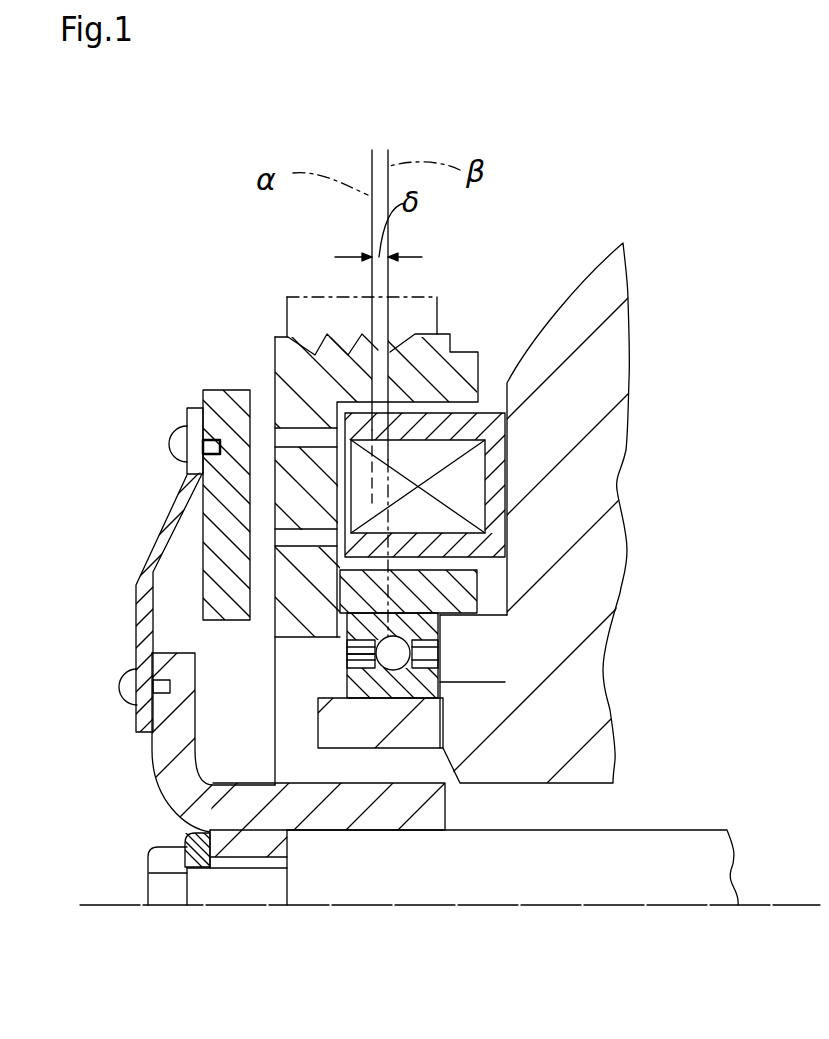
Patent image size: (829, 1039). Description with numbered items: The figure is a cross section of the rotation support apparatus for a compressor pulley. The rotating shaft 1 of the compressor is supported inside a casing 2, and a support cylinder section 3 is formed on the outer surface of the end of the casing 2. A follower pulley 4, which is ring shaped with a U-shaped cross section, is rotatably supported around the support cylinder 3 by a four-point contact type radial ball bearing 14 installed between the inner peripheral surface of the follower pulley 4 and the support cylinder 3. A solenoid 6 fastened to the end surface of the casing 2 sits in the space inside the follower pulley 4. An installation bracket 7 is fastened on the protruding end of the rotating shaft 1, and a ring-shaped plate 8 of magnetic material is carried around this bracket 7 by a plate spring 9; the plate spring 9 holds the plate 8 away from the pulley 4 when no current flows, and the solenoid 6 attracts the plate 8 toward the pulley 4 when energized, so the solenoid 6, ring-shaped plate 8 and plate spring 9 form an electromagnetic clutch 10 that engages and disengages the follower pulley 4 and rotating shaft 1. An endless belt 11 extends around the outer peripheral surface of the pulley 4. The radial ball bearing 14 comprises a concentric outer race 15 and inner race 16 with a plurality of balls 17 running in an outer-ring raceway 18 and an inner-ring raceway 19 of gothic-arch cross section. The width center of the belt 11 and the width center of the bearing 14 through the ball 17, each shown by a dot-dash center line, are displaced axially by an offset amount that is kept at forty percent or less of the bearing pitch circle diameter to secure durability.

The rotating shaft 1 is at (497, 885).
The casing 2 is at (602, 355).
The support cylinder section 3 is at (367, 738).
The follower pulley 4 is at (285, 353).
The solenoid 6 is at (470, 482).
The installation bracket 7 is at (178, 795).
The ring-shaped plate 8 is at (150, 552).
The plate spring 9 is at (143, 612).
The electromagnetic clutch 10 is at (217, 518).
The endless belt 11 is at (427, 297).
The radial ball bearing 14 is at (425, 650).
The outer race 15 is at (420, 612).
The inner race 16 is at (425, 697).
The balls 17 is at (408, 664).
The outer-ring raceway 18 is at (347, 652).
The inner-ring raceway 19 is at (349, 663).